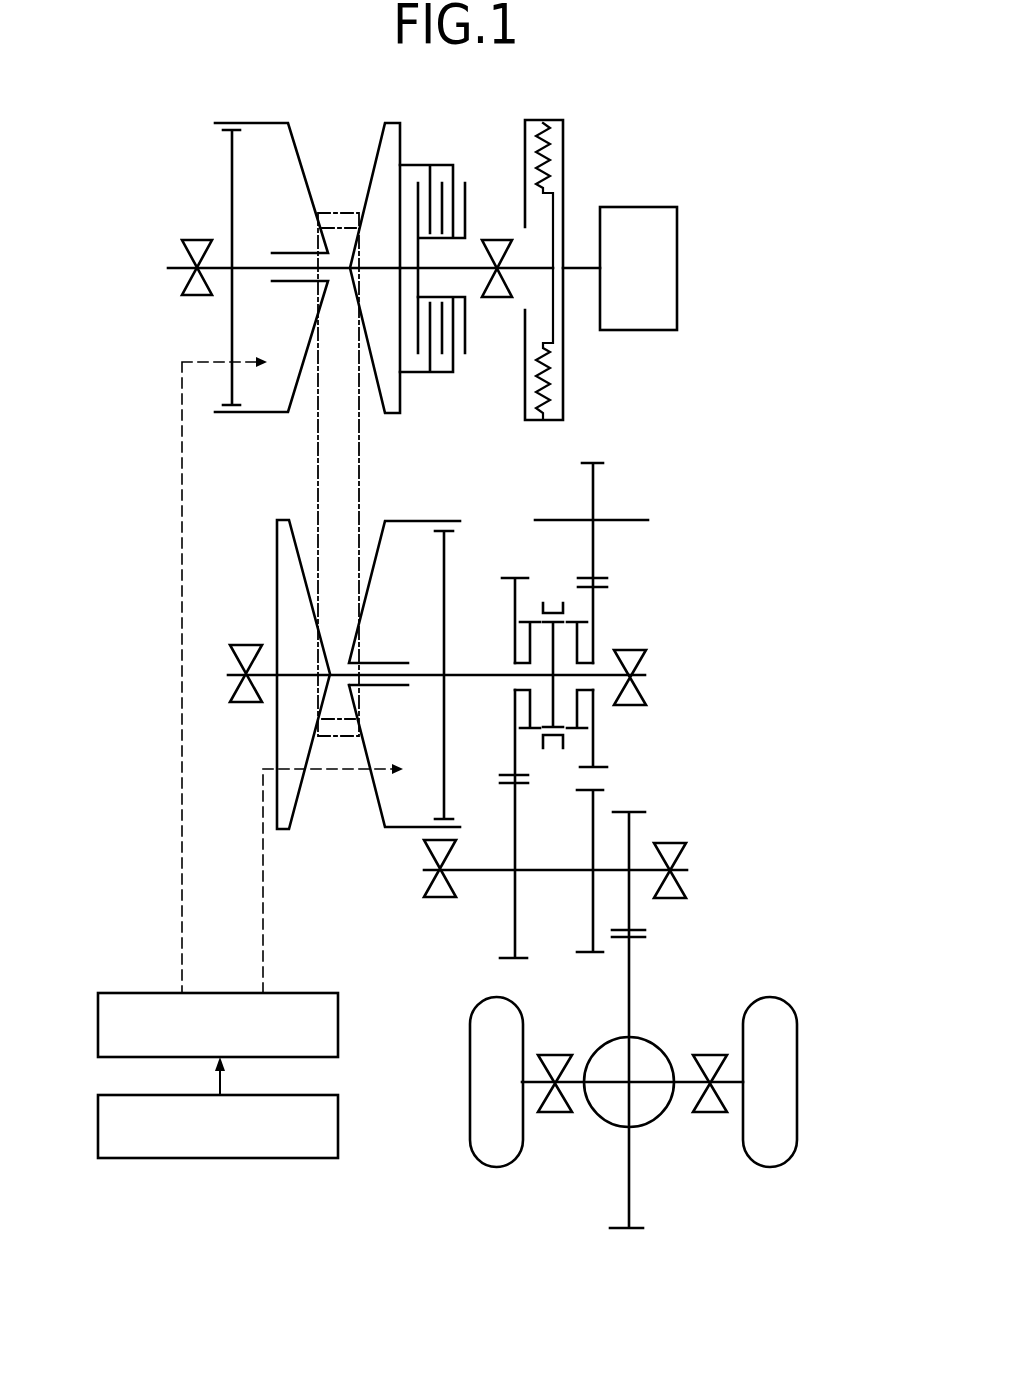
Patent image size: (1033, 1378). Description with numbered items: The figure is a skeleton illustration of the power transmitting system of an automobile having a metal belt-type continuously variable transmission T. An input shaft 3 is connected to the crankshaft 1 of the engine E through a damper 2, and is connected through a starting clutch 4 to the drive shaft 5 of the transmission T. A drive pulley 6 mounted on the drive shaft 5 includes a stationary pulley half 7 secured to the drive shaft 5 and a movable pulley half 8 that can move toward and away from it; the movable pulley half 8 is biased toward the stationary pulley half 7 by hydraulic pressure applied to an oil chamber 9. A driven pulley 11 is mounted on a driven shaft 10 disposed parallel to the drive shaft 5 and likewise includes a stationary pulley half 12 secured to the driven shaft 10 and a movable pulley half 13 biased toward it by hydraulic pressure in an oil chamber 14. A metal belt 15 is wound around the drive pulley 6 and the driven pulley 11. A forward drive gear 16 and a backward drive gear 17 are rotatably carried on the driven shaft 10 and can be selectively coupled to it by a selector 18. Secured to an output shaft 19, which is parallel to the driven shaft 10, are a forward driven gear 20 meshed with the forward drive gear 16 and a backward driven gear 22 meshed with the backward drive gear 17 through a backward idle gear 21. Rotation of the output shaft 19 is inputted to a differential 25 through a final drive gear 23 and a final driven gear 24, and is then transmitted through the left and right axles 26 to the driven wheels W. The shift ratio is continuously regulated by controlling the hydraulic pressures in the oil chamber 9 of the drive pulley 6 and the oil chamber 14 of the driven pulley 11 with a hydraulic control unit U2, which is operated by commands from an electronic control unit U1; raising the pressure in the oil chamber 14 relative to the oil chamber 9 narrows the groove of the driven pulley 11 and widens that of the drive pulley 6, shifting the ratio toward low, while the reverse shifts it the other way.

The engine E is at (633, 283).
The crankshaft 1 is at (578, 273).
The damper 2 is at (577, 154).
The input shaft 3 is at (518, 265).
The starting clutch 4 is at (446, 156).
The drive shaft 5 is at (248, 267).
The drive pulley 6 is at (307, 244).
The stationary pulley half 7 is at (385, 153).
The movable pulley half 8 is at (297, 157).
The oil chamber 9 is at (266, 334).
The driven shaft 10 is at (566, 669).
The driven pulley 11 is at (339, 706).
The stationary pulley half 12 is at (278, 554).
The movable pulley half 13 is at (381, 551).
The oil chamber 14 is at (409, 754).
The metal belt 15 is at (362, 479).
The forward drive gear 16 is at (510, 577).
The backward drive gear 17 is at (600, 590).
The selector 18 is at (553, 736).
The output shaft 19 is at (537, 868).
The forward driven gear 20 is at (520, 960).
The backward idle gear 21 is at (603, 462).
The backward driven gear 22 is at (583, 953).
The final drive gear 23 is at (637, 812).
The final driven gear 24 is at (635, 937).
The differential 25 is at (657, 1045).
The axle 26 is at (570, 1085).
The driven wheel W is at (468, 1133).
The metal belt-type continuously variable transmission T is at (262, 465).
The electronic control unit U1 is at (340, 1115).
The hydraulic control unit U2 is at (340, 1013).